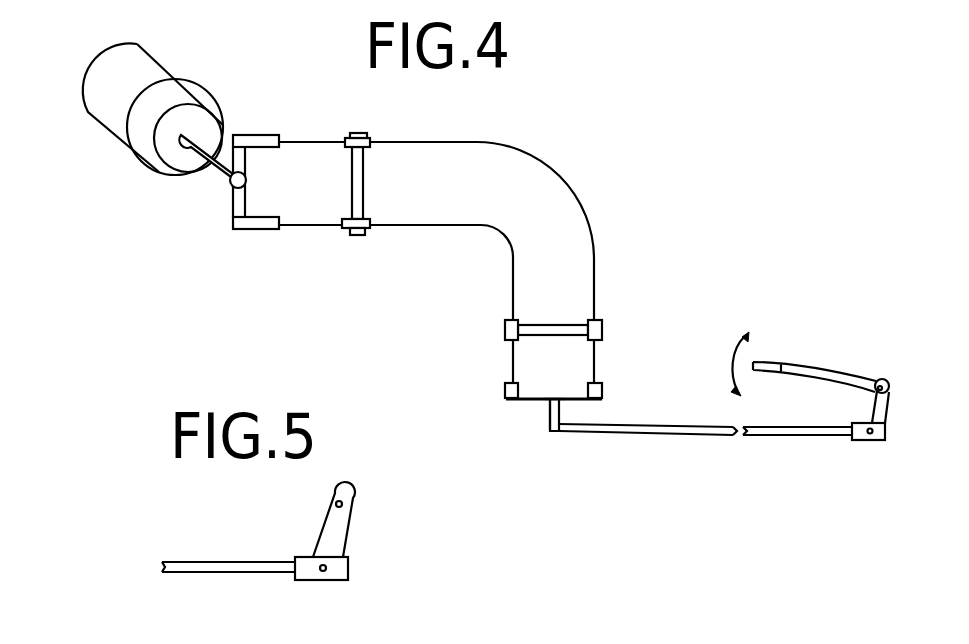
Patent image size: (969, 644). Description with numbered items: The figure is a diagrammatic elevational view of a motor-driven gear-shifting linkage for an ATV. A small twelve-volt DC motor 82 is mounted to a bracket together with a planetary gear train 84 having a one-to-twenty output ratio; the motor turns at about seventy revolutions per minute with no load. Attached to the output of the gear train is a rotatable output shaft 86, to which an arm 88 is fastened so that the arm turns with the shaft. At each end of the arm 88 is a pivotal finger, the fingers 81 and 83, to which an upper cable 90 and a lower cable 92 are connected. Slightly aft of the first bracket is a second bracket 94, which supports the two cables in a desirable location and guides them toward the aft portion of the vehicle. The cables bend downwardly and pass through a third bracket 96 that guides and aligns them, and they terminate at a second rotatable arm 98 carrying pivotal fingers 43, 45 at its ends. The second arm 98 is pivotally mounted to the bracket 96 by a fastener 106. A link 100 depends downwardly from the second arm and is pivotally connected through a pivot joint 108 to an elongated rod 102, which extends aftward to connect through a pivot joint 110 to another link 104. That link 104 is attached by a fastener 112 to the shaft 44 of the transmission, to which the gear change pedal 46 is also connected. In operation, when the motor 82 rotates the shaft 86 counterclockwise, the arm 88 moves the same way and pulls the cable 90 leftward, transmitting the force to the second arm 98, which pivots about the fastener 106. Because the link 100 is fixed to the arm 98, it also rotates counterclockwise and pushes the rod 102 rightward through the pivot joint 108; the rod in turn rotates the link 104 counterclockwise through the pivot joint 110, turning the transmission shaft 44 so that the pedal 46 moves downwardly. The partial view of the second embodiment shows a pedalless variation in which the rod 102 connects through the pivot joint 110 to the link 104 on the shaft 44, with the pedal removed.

In FIG. 4, the DC motor 82 is at (138, 72).
In FIG. 4, the planetary gear train 84 is at (177, 98).
In FIG. 4, the pivotal finger 81 is at (255, 138).
In FIG. 4, the pivotal finger 83 is at (257, 229).
In FIG. 4, the rotatable output shaft 86 is at (215, 162).
In FIG. 4, the arm 88 is at (245, 160).
In FIG. 4, the upper cable 90 is at (450, 142).
In FIG. 4, the lower cable 92 is at (413, 225).
In FIG. 4, the second bracket 94 is at (358, 187).
In FIG. 4, the third bracket 96 is at (535, 324).
In FIG. 4, the pivotal finger 43 is at (505, 388).
In FIG. 4, the pivotal finger 45 is at (602, 388).
In FIG. 4, the second arm 98 is at (526, 400).
In FIG. 4, the link 100 is at (548, 411).
In FIG. 4, the fastener 106 is at (553, 398).
In FIG. 4, the pivot joint 108 is at (554, 432).
In FIG. 4, the elongated rod 102 is at (688, 435).
In FIG. 5, the elongated rod 102 is at (227, 562).
In FIG. 4, the pivot joint 110 is at (864, 441).
In FIG. 5, the pivot joint 110 is at (327, 571).
In FIG. 4, the link 104 is at (873, 415).
In FIG. 5, the link 104 is at (339, 533).
In FIG. 4, the gear change pedal 46 is at (817, 362).
In FIG. 4, the fastener 112 is at (884, 379).
In FIG. 5, the transmission shaft 44 is at (337, 501).